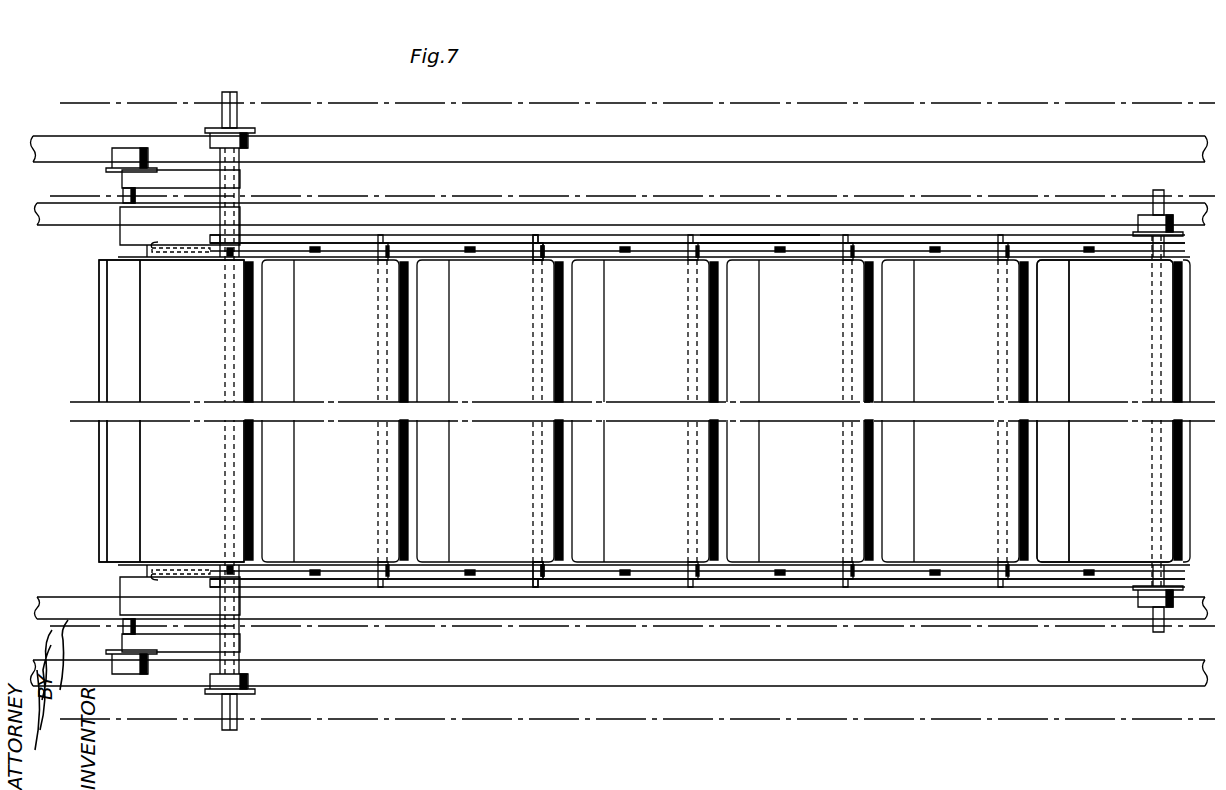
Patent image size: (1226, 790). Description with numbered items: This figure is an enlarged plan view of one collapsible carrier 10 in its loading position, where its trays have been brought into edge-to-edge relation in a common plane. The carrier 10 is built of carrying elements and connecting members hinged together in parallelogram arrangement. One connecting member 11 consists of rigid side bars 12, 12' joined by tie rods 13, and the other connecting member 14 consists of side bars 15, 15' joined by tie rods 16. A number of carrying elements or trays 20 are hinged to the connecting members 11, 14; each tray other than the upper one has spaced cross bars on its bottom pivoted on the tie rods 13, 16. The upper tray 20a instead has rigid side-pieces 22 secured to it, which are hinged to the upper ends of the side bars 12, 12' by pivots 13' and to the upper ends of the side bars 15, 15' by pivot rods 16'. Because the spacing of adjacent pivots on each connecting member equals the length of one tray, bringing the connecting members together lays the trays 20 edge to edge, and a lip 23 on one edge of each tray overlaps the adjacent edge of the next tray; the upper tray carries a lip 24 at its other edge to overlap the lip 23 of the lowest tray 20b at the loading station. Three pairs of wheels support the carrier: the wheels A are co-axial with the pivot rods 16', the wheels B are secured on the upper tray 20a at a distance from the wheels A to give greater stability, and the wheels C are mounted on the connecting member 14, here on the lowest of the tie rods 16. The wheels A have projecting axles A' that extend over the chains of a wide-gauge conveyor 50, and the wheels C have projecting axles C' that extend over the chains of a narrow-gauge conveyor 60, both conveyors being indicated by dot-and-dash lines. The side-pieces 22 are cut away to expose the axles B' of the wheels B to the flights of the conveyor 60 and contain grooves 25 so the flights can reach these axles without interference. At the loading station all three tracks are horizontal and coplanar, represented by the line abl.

The collapsible carrier 10 is at (91, 369).
The connecting member 11 is at (1058, 252).
The side bar 12 is at (520, 555).
The side bar 12' is at (518, 233).
The tie rod 13 is at (689, 411).
The pivot 13' is at (170, 414).
The connecting member 14 is at (1118, 245).
The side bar 15 is at (697, 426).
The side bar 15' is at (760, 224).
The tie rod 16 is at (740, 431).
The pivot rod 16' is at (207, 426).
The carrying element or tray 20 is at (975, 388).
The upper tray 20a is at (166, 501).
The lowest tray 20b is at (1145, 298).
The side-piece 22 is at (173, 185).
The lip 23 is at (263, 323).
The lip 24 is at (107, 328).
The groove 25 is at (240, 198).
The wide-gauge conveyor 50 is at (840, 100).
The narrow-gauge conveyor 60 is at (980, 196).
The line abc1 abl is at (553, 137).
The wheel A is at (238, 401).
The axle A' is at (221, 412).
The wheel B is at (131, 413).
The axle B' is at (103, 413).
The wheel C is at (1147, 416).
The axle C' is at (956, 415).